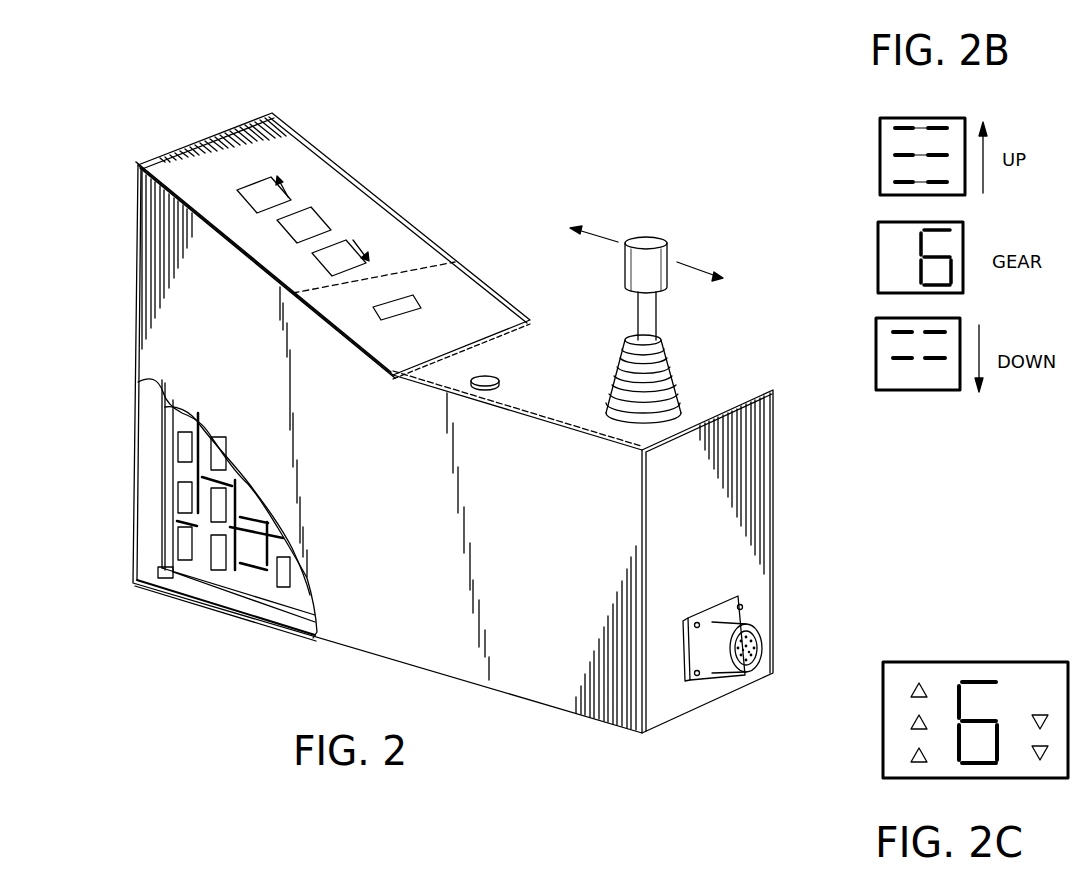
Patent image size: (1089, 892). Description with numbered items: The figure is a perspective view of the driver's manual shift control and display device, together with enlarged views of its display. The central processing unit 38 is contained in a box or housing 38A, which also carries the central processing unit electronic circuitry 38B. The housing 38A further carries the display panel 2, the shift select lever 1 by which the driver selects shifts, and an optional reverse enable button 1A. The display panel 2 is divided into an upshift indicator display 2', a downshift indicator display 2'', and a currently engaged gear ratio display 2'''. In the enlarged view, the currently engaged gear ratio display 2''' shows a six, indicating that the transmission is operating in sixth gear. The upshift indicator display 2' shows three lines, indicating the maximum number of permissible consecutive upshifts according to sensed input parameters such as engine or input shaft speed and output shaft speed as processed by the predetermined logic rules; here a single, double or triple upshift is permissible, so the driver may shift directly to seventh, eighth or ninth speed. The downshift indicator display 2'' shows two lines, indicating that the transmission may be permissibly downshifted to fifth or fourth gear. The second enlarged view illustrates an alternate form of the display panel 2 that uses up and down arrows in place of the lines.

In FIG. 2, the shift select lever 1 is at (656, 242).
In FIG. 2, the reverse enable button 1A is at (497, 388).
In FIG. 2, the display panel 2 is at (400, 263).
In FIG. 2B, the upshift indicator display 2' is at (904, 138).
In FIG. 2B, the downshift indicator display 2'' is at (893, 338).
In FIG. 2B, the currently engaged gear ratio display 2''' is at (896, 246).
In FIG. 2, the central processing unit 38 is at (157, 438).
In FIG. 2, the housing 38A is at (387, 638).
In FIG. 2, the central processing unit electronic circuitry 38B is at (180, 493).